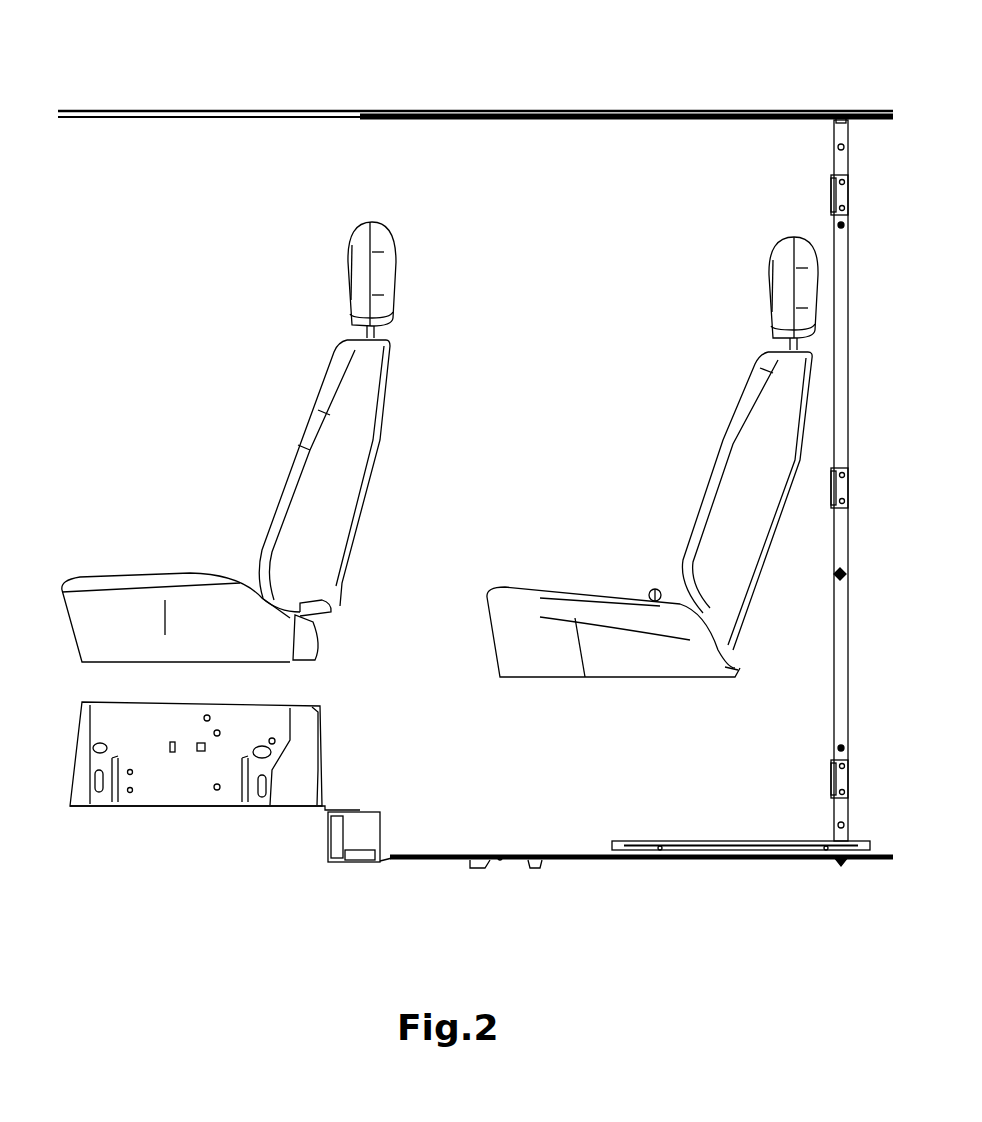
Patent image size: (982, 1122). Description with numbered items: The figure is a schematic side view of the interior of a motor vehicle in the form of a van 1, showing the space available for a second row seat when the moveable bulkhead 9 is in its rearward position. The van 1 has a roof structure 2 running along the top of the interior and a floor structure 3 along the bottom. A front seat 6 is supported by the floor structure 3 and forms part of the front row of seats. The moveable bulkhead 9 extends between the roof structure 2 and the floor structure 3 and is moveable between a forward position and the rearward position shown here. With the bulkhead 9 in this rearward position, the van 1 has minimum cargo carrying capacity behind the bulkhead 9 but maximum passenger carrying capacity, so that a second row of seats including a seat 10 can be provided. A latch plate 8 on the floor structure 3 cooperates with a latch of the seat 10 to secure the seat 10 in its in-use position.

The van 1 is at (178, 80).
The roof structure 2 is at (446, 110).
The floor structure 3 is at (540, 857).
The front seat 6 is at (293, 445).
The latch plate 8 is at (644, 840).
The moveable bulkhead 9 is at (830, 195).
The seat 10 is at (727, 440).